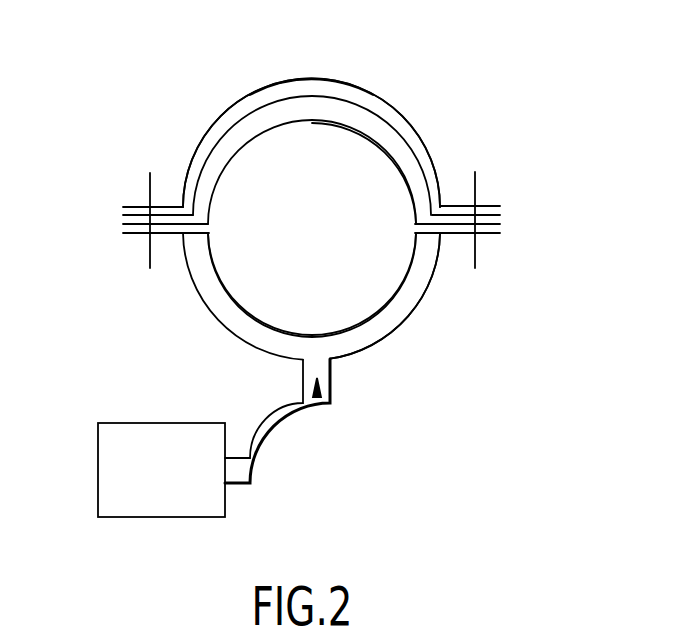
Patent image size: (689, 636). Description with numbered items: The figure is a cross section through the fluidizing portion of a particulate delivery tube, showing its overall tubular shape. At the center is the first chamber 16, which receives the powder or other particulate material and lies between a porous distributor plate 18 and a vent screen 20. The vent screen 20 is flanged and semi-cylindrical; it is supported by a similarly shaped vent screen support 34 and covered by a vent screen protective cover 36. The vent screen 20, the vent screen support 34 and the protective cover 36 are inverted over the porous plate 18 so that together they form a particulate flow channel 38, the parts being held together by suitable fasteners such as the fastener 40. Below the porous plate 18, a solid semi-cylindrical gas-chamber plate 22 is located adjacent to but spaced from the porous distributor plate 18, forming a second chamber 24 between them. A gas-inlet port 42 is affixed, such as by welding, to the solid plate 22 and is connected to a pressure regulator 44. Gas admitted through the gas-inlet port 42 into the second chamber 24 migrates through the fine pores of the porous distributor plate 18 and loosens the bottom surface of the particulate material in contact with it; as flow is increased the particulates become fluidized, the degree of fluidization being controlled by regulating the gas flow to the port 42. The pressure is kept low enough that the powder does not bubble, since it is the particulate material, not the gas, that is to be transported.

The first chamber 16 is at (299, 235).
The porous distributor plate 18 is at (237, 305).
The vent screen 20 is at (213, 157).
The gas-chamber plate 22 is at (424, 296).
The second chamber 24 is at (367, 333).
The vent screen support 34 is at (390, 155).
The vent screen protective cover 36 is at (228, 109).
The particulate flow channel 38 is at (297, 163).
The fastener 40 is at (475, 185).
The gas-inlet port 42 is at (317, 397).
The pressure regulator 44 is at (150, 483).